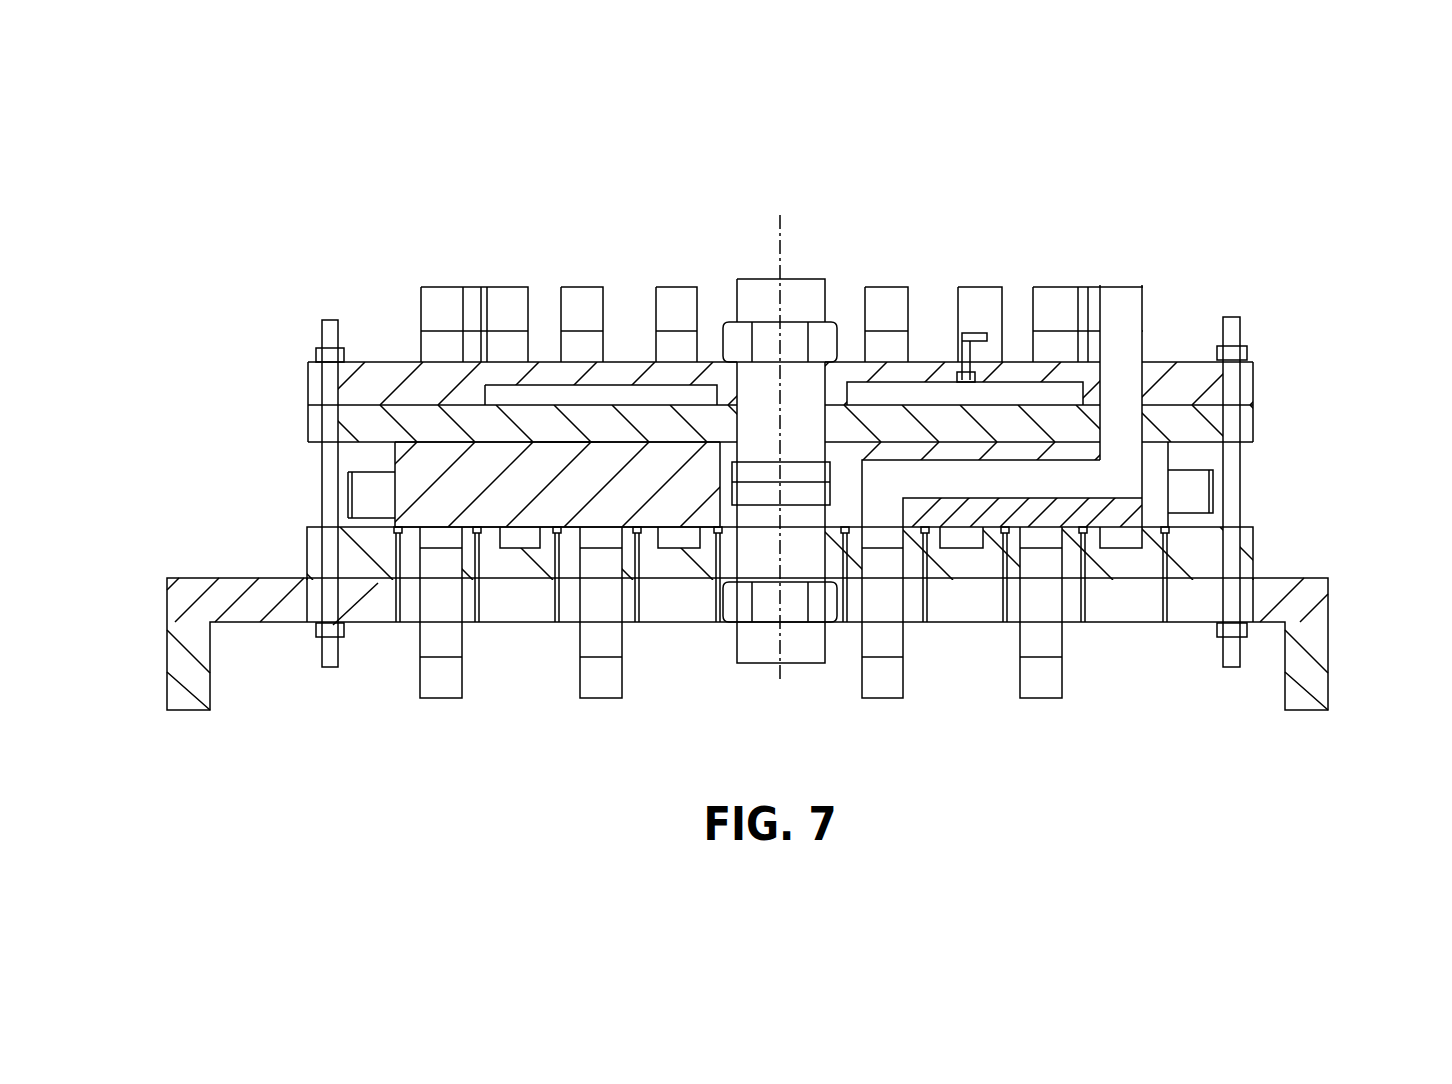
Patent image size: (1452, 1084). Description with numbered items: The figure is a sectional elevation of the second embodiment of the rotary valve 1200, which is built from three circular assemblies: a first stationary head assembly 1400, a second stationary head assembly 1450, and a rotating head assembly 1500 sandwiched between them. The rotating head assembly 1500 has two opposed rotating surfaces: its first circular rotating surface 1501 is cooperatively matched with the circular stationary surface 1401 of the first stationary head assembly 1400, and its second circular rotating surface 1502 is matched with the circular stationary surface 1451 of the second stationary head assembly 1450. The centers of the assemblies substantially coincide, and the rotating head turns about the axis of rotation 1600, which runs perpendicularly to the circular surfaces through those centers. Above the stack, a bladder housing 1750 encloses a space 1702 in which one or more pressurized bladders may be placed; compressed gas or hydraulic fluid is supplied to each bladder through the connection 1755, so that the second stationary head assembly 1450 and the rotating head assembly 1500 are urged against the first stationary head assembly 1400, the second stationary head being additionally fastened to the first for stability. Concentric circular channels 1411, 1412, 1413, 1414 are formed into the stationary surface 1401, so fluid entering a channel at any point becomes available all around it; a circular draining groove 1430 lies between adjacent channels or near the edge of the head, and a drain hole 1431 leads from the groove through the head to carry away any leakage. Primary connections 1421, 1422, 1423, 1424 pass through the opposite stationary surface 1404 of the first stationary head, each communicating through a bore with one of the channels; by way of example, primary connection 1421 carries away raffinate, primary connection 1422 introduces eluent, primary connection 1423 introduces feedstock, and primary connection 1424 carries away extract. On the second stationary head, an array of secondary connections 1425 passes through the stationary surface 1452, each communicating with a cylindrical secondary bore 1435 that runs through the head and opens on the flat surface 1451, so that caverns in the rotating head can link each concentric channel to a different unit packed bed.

The rotary valve 1200 is at (265, 495).
The first stationary head assembly 1400 is at (1250, 548).
The circular stationary surface 1401 is at (1173, 530).
The stationary surface 1404 is at (376, 585).
The concentric circular channel 1411 is at (1120, 533).
The concentric circular channel 1412 is at (1053, 533).
The concentric circular channel 1413 is at (958, 535).
The concentric circular channel 1414 is at (885, 535).
The primary connection 1421 is at (1045, 677).
The primary connection 1422 is at (435, 680).
The primary connection 1423 is at (605, 678).
The primary connection 1424 is at (877, 667).
The secondary connection 1425 is at (587, 285).
The circular draining groove 1430 is at (555, 535).
The drain hole 1431 is at (560, 615).
The cylindrical secondary bore 1435 is at (1113, 430).
The second stationary head assembly 1450 is at (1200, 425).
The circular stationary surface 1451 is at (570, 443).
The stationary surface 1452 is at (558, 402).
The rotating head assembly 1500 is at (1125, 512).
The first circular rotating surface 1501 is at (420, 522).
The second circular rotating surface 1502 is at (475, 437).
The axis of rotation 1600 is at (780, 433).
The space 1702 is at (1005, 395).
The bladder housing 1750 is at (1192, 395).
The connection 1755 is at (978, 335).